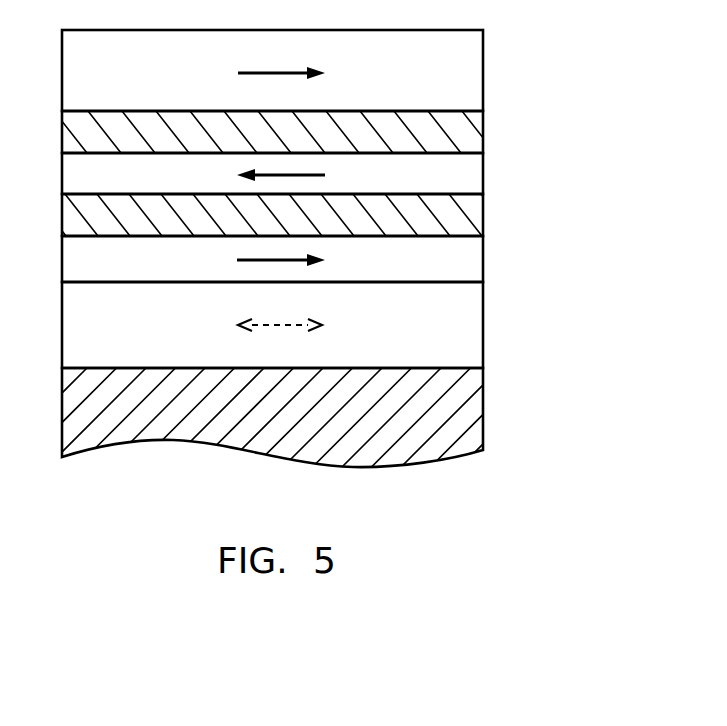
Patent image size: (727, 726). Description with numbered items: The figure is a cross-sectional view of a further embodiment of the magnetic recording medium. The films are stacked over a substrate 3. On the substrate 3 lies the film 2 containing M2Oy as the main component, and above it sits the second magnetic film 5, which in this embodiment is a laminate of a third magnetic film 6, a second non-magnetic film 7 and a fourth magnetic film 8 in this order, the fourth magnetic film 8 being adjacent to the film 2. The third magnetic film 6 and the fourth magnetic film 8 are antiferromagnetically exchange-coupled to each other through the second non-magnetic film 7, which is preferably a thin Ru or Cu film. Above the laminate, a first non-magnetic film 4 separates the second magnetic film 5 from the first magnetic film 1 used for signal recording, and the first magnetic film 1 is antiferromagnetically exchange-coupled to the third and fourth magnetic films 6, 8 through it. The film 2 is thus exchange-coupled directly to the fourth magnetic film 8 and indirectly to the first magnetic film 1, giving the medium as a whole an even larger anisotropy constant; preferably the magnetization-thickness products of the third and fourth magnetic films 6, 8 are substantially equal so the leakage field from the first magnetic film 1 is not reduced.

The first magnetic film 1 is at (447, 82).
The first non-magnetic film 4 is at (442, 143).
The second magnetic film 5 is at (329, 222).
The third magnetic film 6 is at (452, 183).
The second non-magnetic film 7 is at (455, 227).
The fourth magnetic film 8 is at (320, 263).
The film containing M2Oy as the main component 2 is at (455, 325).
The substrate 3 is at (447, 415).